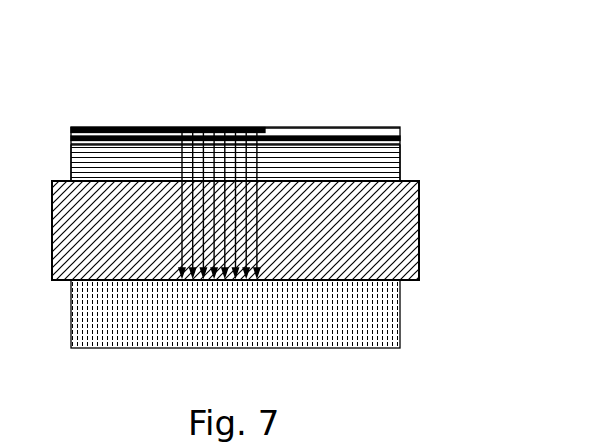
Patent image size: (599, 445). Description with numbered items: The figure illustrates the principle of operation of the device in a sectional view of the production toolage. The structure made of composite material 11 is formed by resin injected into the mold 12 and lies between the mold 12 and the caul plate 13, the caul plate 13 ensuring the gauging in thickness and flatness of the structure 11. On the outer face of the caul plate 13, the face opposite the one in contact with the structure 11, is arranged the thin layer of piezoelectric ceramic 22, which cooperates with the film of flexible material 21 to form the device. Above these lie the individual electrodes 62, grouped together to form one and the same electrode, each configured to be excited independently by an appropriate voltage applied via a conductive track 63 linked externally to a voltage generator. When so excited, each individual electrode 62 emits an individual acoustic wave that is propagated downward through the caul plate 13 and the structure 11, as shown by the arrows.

The structure made of composite material 11 is at (420, 226).
The mold 12 is at (402, 334).
The caul plate 13 is at (402, 165).
The film of flexible material 21 is at (312, 128).
The layer of piezoelectric ceramic 22 is at (383, 128).
The individual electrode 62 is at (200, 127).
The conductive track 63 is at (117, 127).